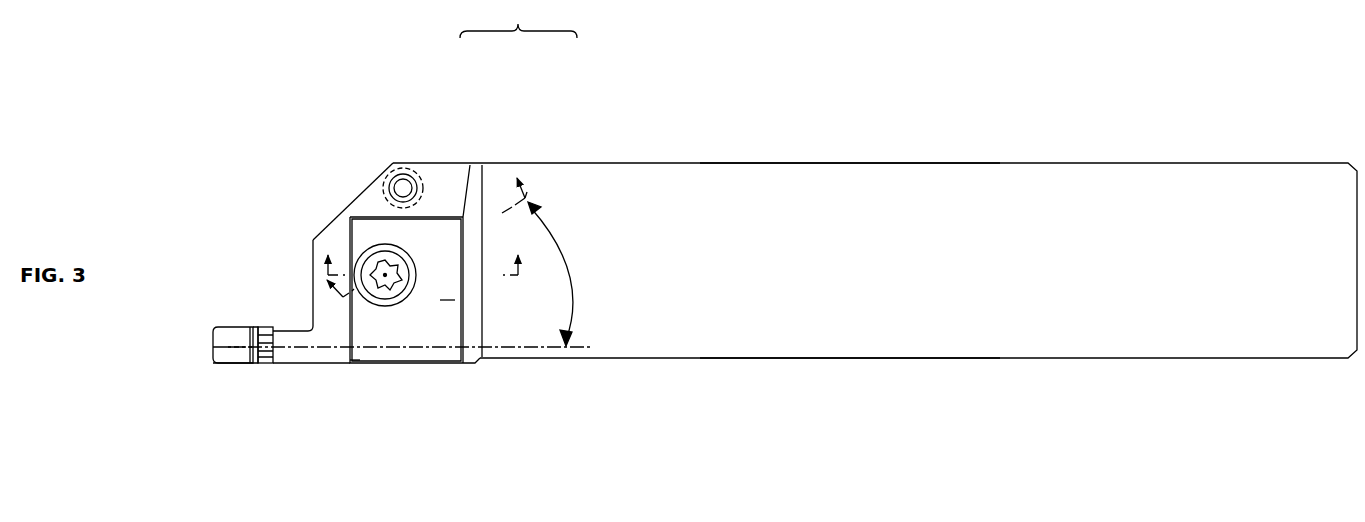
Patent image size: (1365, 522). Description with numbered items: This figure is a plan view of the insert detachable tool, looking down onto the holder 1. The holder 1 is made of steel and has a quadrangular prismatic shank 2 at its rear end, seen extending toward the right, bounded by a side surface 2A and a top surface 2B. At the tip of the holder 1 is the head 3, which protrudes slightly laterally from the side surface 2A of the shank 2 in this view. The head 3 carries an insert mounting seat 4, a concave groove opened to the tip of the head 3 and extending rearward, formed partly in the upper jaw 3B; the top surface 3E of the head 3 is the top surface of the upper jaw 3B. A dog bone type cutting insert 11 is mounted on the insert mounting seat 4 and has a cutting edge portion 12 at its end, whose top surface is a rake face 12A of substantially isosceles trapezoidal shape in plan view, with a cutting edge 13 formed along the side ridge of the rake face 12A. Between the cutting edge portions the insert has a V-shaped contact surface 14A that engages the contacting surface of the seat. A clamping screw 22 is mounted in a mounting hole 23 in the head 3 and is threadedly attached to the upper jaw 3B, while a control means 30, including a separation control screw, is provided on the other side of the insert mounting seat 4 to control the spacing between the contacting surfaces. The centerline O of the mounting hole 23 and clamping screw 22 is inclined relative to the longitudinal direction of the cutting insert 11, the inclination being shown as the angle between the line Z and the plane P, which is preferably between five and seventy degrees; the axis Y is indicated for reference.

The holder 1 is at (518, 24).
The shank 2 is at (588, 128).
The side surface 2A is at (876, 360).
The top surface 2B is at (866, 178).
The head 3 is at (440, 128).
The upper jaw 3B is at (290, 365).
The top surface of the head 3E is at (433, 300).
The insert mounting seat 4 is at (356, 375).
The cutting insert 11 is at (243, 305).
The cutting edge portion 12 is at (210, 305).
The rake face 12A is at (225, 360).
The cutting edge 13 is at (213, 347).
The contact surface 14A is at (265, 326).
The clamping screw 22 is at (393, 283).
The mounting hole 23 is at (372, 230).
The control means 30 is at (402, 162).
The plane P is at (335, 365).
The centerline O is at (412, 257).
The Y axis direction Y is at (433, 264).
The line ZZ Z is at (435, 252).